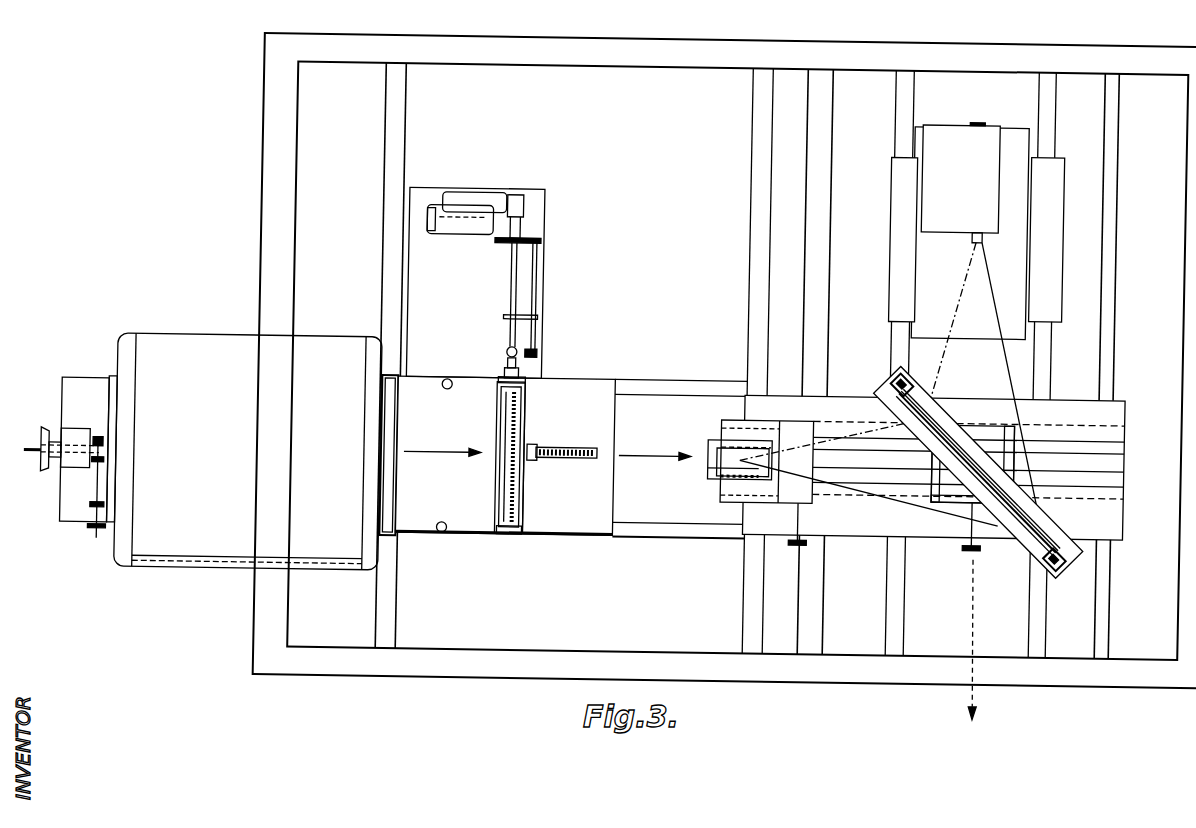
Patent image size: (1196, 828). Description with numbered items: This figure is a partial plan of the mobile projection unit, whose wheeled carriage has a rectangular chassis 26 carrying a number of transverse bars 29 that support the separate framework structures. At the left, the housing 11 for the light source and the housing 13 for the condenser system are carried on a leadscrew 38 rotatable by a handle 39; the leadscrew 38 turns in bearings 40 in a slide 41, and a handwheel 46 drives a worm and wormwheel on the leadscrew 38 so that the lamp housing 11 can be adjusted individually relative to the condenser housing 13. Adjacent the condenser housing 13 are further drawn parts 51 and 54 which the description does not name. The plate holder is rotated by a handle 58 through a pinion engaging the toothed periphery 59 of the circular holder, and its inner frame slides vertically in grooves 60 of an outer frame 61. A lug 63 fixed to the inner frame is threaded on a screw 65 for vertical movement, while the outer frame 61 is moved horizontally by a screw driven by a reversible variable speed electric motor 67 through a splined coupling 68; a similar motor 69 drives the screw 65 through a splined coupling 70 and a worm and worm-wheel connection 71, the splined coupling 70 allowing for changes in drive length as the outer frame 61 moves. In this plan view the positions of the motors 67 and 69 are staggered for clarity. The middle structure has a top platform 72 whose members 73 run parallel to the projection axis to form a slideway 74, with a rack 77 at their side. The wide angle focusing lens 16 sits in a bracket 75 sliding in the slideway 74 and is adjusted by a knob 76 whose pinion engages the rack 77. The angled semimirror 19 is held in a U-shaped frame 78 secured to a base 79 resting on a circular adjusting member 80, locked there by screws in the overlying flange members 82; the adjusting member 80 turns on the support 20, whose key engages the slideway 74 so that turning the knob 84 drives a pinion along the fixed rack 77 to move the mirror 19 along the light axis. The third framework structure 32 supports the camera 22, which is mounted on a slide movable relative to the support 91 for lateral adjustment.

The housing 11 is at (212, 342).
The housing 13 is at (420, 540).
The wide angle focusing lens 16 is at (708, 470).
The angled semimirror 19 is at (936, 432).
The support 20 is at (940, 500).
The camera 22 is at (948, 128).
The rectangular chassis 26 is at (1182, 230).
The transverse bars 29 is at (396, 124).
The third framework structure 32 is at (1052, 230).
The leadscrew 38 is at (565, 450).
The handle 39 is at (46, 438).
The bearings 40 is at (74, 470).
The slide 41 is at (75, 520).
The handwheel 46 is at (100, 547).
The end plate 51 is at (394, 542).
The pivot pin 54 is at (452, 540).
The handle 58 is at (538, 463).
The toothed periphery 59 is at (508, 488).
The grooves 60 is at (508, 538).
The outer frame 61 is at (525, 540).
The lug 63 is at (490, 380).
The screw 65 is at (504, 374).
The electric motor 67 is at (472, 196).
The splined coupling 68 is at (508, 287).
The motor 69 is at (466, 238).
The splined coupling 70 is at (534, 285).
The worm and worm-wheel connection 71 is at (506, 353).
The top platform 72 is at (1118, 395).
The members 73 is at (1118, 440).
The slideway 74 is at (1108, 457).
The bracket 75 is at (762, 428).
The knob 76 is at (810, 542).
The rack 77 is at (1115, 493).
The U-shaped frame 78 is at (886, 383).
The base 79 is at (915, 390).
The circular adjusting member 80 is at (1008, 438).
The overlying flange members 82 is at (975, 445).
The knob 84 is at (972, 548).
The support 91 is at (1005, 135).